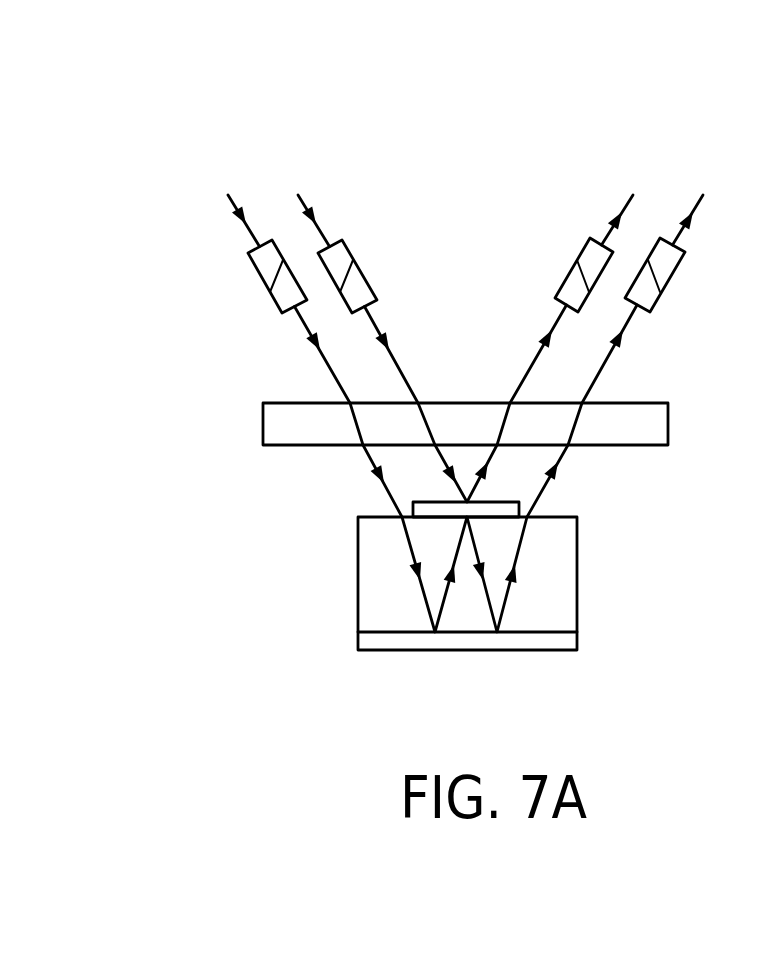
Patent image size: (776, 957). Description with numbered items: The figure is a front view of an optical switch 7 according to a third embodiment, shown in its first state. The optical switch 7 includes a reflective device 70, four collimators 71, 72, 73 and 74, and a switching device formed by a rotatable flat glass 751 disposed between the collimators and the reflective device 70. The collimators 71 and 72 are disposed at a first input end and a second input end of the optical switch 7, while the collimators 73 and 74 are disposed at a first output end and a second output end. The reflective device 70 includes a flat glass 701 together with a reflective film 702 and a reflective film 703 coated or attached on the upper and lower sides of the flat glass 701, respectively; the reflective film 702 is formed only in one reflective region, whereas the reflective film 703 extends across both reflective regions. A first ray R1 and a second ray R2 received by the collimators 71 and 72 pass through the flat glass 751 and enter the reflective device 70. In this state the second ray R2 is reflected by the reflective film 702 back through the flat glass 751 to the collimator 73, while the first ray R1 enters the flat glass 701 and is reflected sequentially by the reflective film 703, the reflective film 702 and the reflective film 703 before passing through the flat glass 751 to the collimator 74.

The optical switch 7 is at (475, 156).
The first ray R1 is at (464, 392).
The second ray R2 is at (464, 327).
The collimator 71 is at (263, 264).
The collimator 72 is at (352, 243).
The collimator 73 is at (585, 241).
The collimator 74 is at (670, 265).
The rotatable flat glass 751 is at (670, 424).
The reflective device 70 is at (381, 576).
The flat glass 701 is at (363, 572).
The reflective film 702 is at (413, 502).
The reflective film 703 is at (417, 636).